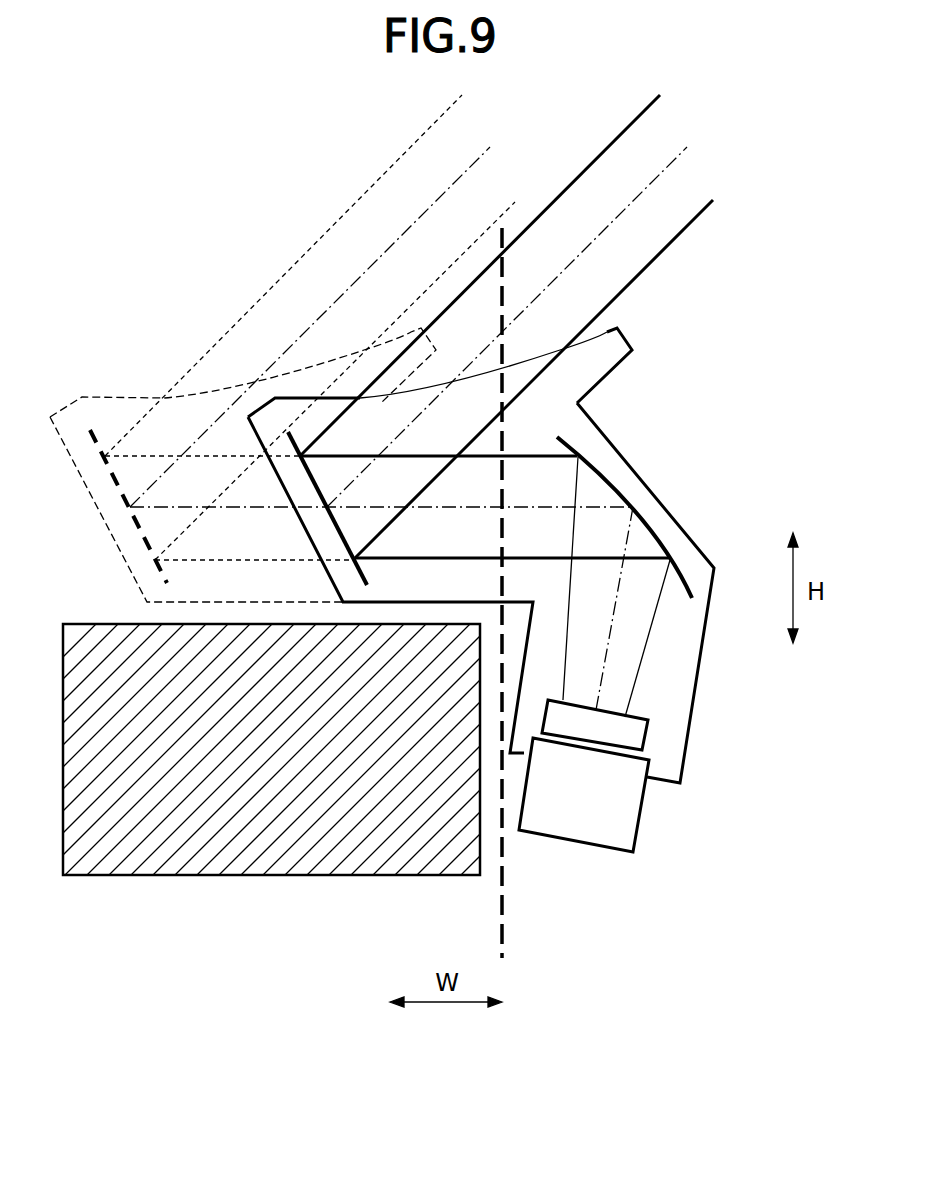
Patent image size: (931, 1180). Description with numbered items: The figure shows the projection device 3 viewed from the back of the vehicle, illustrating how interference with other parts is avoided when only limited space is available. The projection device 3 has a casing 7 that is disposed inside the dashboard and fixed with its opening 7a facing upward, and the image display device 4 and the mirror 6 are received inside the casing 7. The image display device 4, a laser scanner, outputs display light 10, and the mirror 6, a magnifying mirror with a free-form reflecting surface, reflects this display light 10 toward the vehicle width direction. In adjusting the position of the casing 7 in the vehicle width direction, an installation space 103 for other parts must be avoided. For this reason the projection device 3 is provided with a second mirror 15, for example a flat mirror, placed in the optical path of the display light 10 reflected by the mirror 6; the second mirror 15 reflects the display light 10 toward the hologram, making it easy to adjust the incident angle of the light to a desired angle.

The projection device 3 is at (664, 478).
The image display device 4 is at (633, 737).
The mirror 6 is at (665, 547).
The casing 7 is at (708, 636).
The opening 7a is at (606, 328).
The display light 10 is at (526, 449).
The second mirror 15 is at (313, 477).
The installation space 103 is at (272, 875).